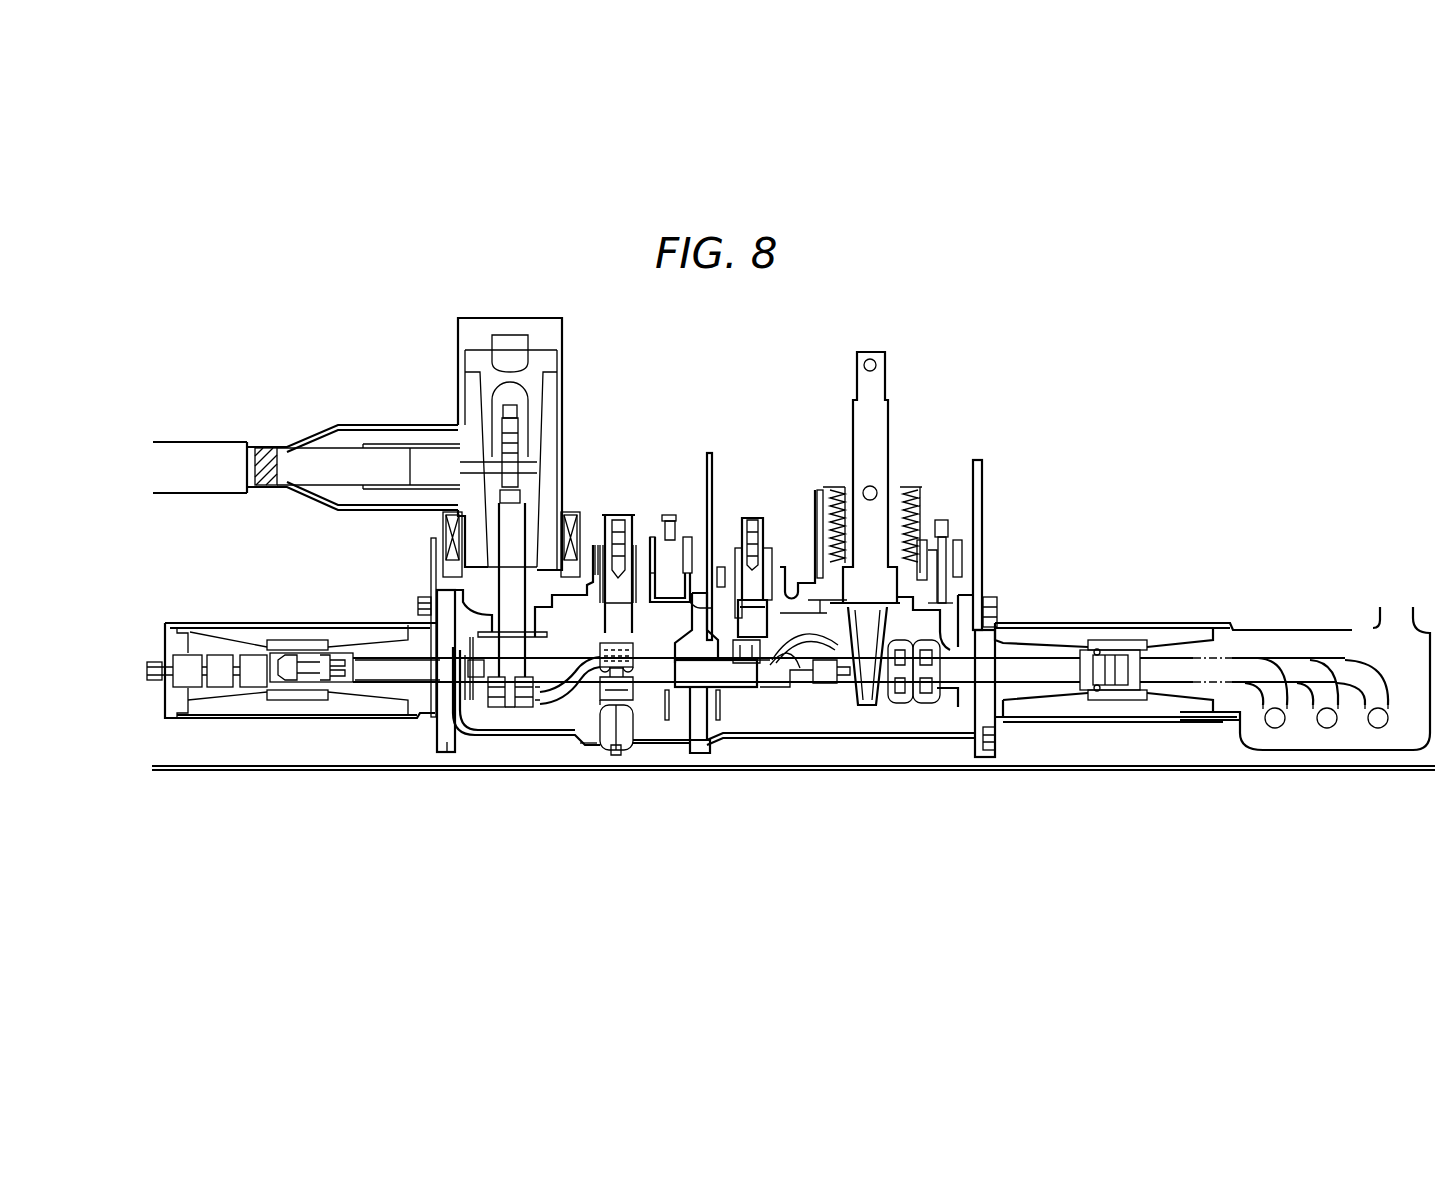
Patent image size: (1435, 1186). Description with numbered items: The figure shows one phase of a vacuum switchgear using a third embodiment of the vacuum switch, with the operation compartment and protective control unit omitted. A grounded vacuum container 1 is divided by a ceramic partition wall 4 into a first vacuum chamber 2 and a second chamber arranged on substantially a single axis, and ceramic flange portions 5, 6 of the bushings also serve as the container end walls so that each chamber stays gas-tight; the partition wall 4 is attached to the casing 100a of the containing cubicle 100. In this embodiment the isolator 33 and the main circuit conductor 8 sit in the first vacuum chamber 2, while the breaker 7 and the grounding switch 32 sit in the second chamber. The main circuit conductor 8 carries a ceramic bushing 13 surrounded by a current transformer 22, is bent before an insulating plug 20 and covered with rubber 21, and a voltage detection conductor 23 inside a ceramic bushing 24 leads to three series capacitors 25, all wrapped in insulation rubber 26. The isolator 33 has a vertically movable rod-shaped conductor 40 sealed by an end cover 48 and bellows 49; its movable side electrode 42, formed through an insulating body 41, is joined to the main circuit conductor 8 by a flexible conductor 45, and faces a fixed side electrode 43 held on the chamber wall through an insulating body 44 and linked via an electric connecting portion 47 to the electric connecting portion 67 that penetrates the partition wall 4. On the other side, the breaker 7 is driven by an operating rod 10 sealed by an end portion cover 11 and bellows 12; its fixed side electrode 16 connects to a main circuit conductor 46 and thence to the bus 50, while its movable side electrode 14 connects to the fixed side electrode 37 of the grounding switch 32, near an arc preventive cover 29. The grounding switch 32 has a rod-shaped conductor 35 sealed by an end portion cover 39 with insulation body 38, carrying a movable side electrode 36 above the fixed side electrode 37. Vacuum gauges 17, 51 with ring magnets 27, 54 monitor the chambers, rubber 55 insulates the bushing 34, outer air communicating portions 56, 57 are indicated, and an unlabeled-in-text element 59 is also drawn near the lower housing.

The vacuum container 1 is at (533, 747).
The first vacuum chamber 2 is at (587, 730).
The partition wall 4 is at (695, 743).
The flange portion 5 is at (447, 742).
The flange portion 6 is at (965, 740).
The breaker 7 is at (866, 663).
The main circuit conductor 8 is at (477, 468).
The operating rod 10 is at (882, 402).
The end portion cover 11 is at (912, 487).
The bellows 12 is at (842, 513).
The bushing 13 is at (490, 517).
The movable side electrode 14 is at (905, 713).
The fixed side electrode 16 is at (921, 700).
The vacuum gauge 17 is at (672, 517).
The insulating plug 20 is at (498, 380).
The rubber 21 is at (338, 493).
The current transformer 22 is at (567, 547).
The voltage detection conductor 23 is at (353, 670).
The bushing 24 is at (377, 688).
The capacitors 25 is at (253, 663).
The insulation rubber 26 is at (337, 632).
The magnet 27 is at (692, 557).
The arc preventive cover 29 is at (826, 707).
The grounding switch 32 is at (762, 585).
The isolator 33 is at (622, 573).
The bushing 34 is at (1040, 700).
The rod-shaped conductor 35 is at (757, 587).
The movable side electrode 36 is at (773, 670).
The fixed side electrode 37 is at (742, 668).
The insulation body 38 is at (712, 553).
The end portion cover 39 is at (732, 560).
The rod-shaped conductor 40 is at (608, 513).
The insulating body 41 is at (615, 641).
The movable side electrode 42 is at (637, 735).
The fixed side electrode 43 is at (622, 750).
The insulating body 44 is at (610, 733).
The flexible conductor 45 is at (570, 703).
The main circuit conductor 46 is at (1033, 670).
The electric connecting portion 47 is at (660, 707).
The end cover 48 is at (597, 560).
The bellows 49 is at (640, 557).
The main circuit conductor 50 is at (1373, 725).
The vacuum gauge 51 is at (942, 517).
The magnet 54 is at (962, 547).
The rubber 55 is at (1202, 712).
The outer air communicating portion 56 is at (1027, 752).
The outer air communicating portion 57 is at (392, 740).
The bearing 59 is at (488, 705).
The electric connecting portion 67 is at (717, 680).
The containing cubicle 100 is at (227, 772).
The casing 100a is at (1123, 770).